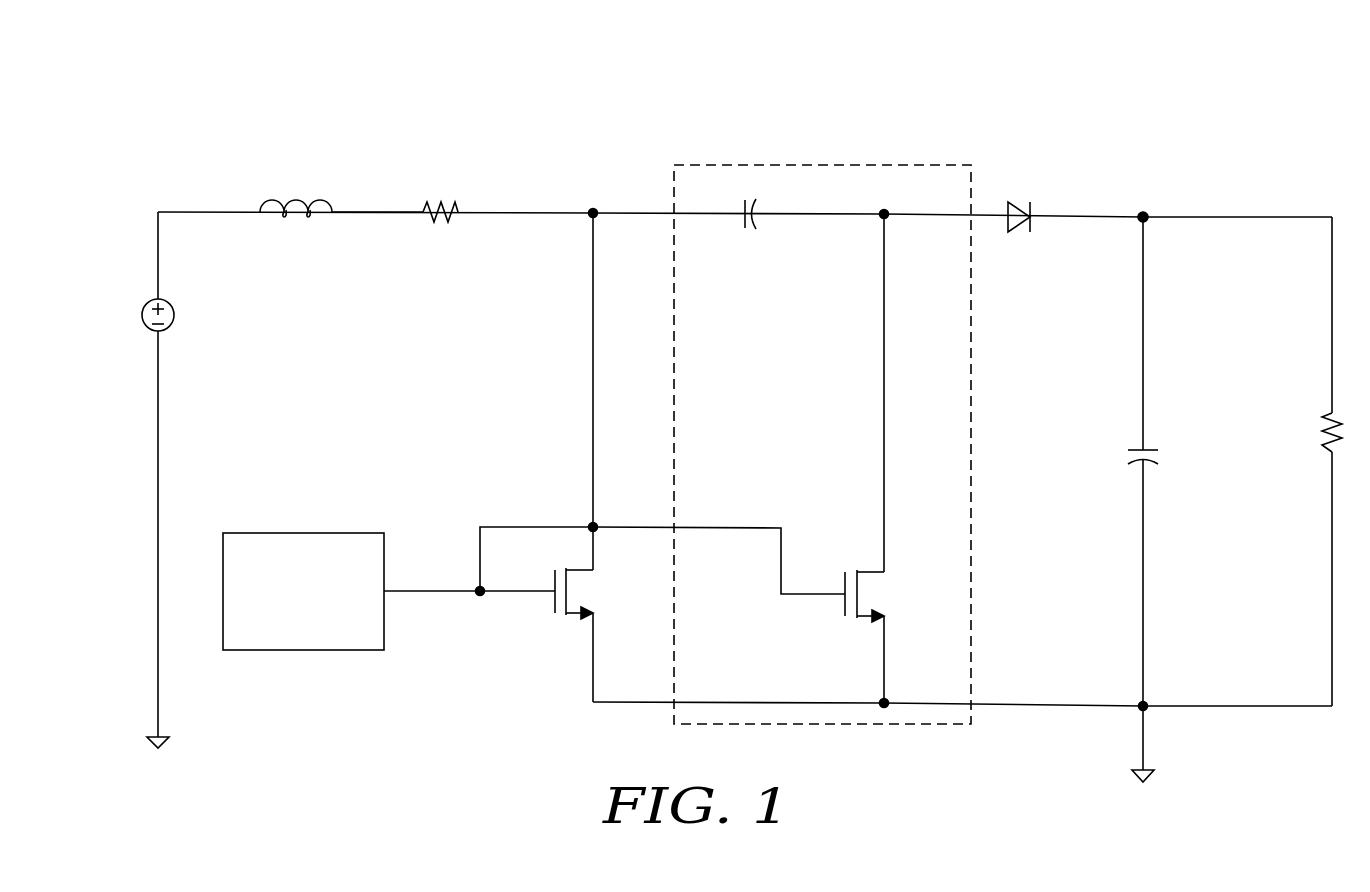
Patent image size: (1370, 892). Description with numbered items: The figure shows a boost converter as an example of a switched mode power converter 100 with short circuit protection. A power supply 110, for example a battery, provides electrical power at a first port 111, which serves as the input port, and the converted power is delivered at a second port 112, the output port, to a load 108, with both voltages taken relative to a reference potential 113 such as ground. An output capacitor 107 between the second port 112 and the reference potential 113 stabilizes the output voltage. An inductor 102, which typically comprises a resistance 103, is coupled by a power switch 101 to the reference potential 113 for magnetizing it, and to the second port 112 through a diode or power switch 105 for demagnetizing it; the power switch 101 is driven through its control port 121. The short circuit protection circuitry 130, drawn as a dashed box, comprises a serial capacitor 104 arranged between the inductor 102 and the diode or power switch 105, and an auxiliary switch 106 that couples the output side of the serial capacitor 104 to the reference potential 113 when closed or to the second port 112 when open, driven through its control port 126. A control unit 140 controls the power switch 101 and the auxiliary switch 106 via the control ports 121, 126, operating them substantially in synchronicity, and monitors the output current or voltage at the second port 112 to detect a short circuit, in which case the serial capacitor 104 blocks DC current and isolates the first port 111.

The power converter 100 is at (425, 712).
The power switch 101 is at (578, 590).
The inductor 102 is at (293, 185).
The resistance 103 is at (435, 200).
The serial capacitor 104 is at (750, 232).
The diode or power switch 105 is at (1020, 200).
The auxiliary switch 106 is at (868, 592).
The output capacitor 107 is at (1120, 457).
The load 108 is at (1315, 440).
The power supply 110 is at (174, 318).
The first port 111 is at (158, 282).
The second port 112 is at (1140, 222).
The reference potential 113 is at (168, 732).
The control port 121 is at (515, 596).
The control port 126 is at (812, 598).
The short circuit protection circuitry 130 is at (673, 322).
The control unit 140 is at (309, 531).